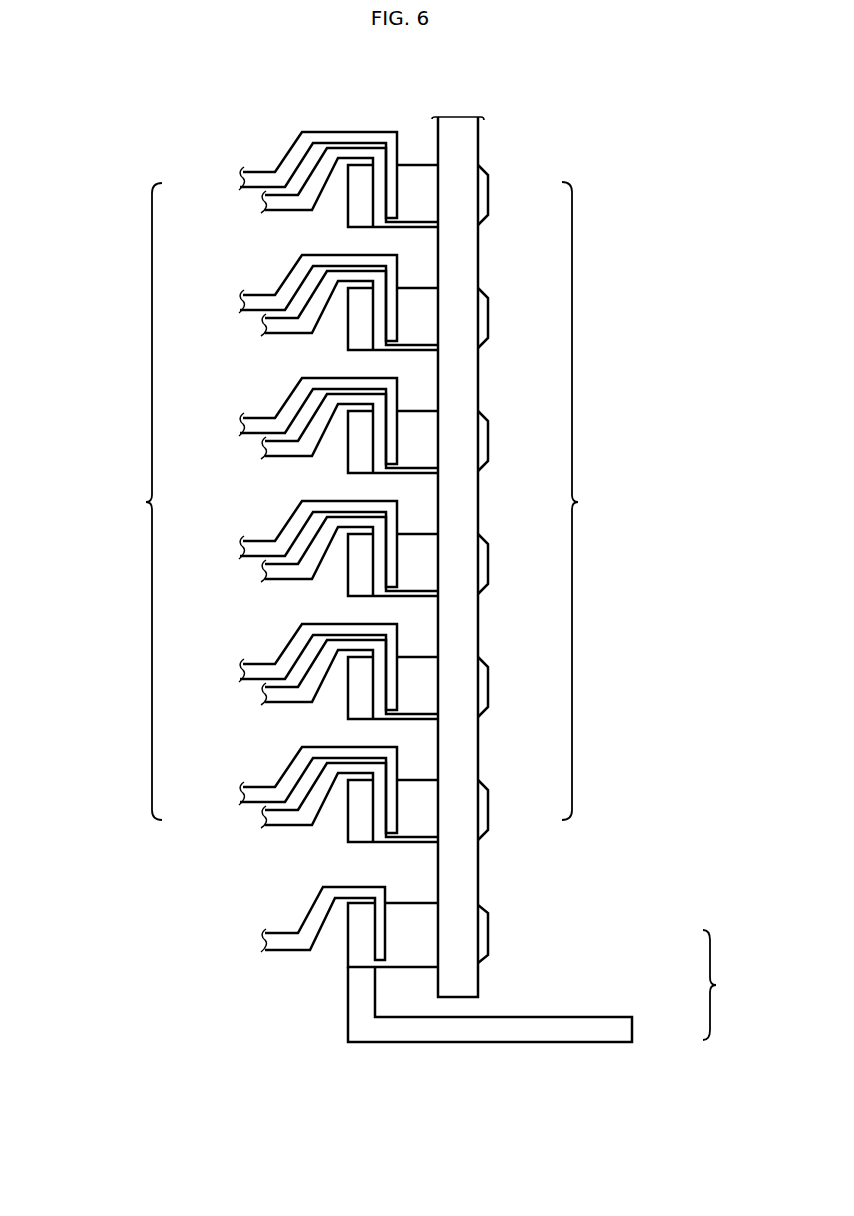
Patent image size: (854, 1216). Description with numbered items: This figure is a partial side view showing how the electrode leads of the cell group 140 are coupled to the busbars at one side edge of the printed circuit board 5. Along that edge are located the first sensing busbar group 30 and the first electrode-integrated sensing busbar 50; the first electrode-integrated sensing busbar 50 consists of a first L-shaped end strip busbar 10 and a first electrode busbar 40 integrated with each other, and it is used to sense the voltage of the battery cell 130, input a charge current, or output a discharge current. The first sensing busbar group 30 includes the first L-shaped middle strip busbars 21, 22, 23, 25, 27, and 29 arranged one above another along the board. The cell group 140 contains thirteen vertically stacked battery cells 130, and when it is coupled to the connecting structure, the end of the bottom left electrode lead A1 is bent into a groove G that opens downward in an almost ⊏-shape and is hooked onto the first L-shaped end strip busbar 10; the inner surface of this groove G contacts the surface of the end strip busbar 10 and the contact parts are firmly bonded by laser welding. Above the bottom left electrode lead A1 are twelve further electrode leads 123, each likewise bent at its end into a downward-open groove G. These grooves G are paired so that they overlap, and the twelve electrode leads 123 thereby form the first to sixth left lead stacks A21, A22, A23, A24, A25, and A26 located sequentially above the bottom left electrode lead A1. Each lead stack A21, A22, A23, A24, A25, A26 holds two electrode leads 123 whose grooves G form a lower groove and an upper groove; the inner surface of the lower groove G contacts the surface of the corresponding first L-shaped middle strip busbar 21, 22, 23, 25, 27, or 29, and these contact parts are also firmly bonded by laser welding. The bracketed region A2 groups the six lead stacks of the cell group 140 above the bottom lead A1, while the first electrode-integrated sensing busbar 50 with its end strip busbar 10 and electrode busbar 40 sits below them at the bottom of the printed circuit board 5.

The printed circuit board 5 is at (459, 132).
The first L-shaped end strip busbar 10 is at (488, 933).
The first L-shaped middle strip busbar 21 is at (517, 810).
The first L-shaped middle strip busbar 22 is at (517, 687).
The first L-shaped middle strip busbar 23 is at (517, 564).
The first L-shaped middle strip busbar 25 is at (517, 441).
The first L-shaped middle strip busbar 27 is at (517, 318).
The first L-shaped middle strip busbar 29 is at (488, 193).
The first sensing busbar group 30 is at (585, 501).
The first electrode busbar 40 is at (627, 1027).
The first electrode-integrated sensing busbar 50 is at (725, 985).
The bottom left electrode lead A1 is at (315, 921).
The second connection area group A2 is at (111, 501).
The cell group 140 is at (111, 501).
The first left lead stack A21 is at (304, 794).
The second left lead stack A22 is at (304, 671).
The third left lead stack A23 is at (304, 548).
The fourth left lead stack A24 is at (304, 425).
The fifth left lead stack A25 is at (304, 302).
The sixth left lead stack A26 is at (265, 204).
The electrode lead 123 is at (301, 917).
The battery cell 130 is at (287, 940).
The groove G is at (323, 192).